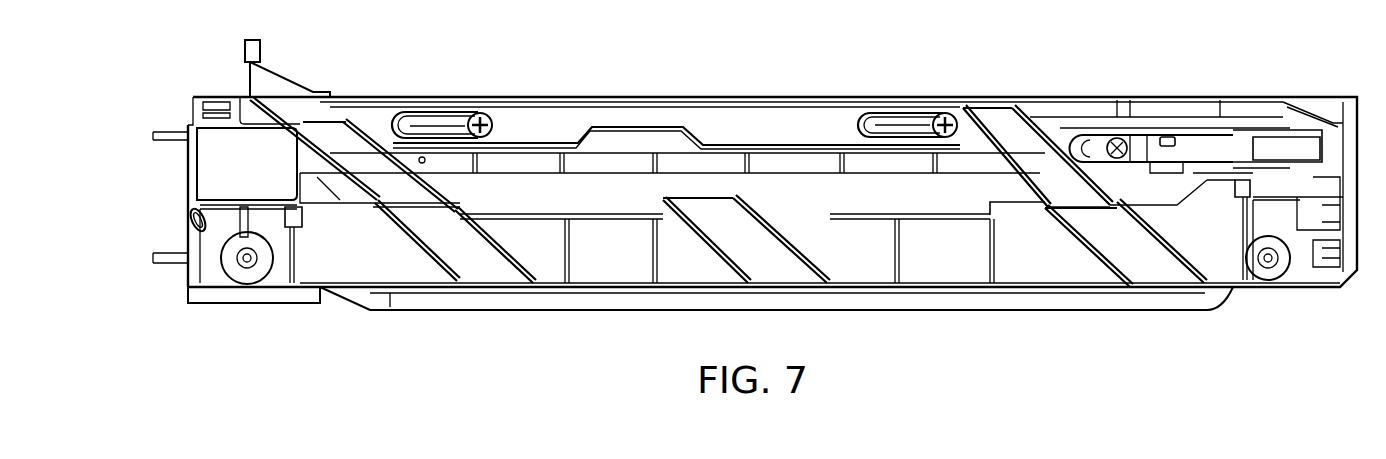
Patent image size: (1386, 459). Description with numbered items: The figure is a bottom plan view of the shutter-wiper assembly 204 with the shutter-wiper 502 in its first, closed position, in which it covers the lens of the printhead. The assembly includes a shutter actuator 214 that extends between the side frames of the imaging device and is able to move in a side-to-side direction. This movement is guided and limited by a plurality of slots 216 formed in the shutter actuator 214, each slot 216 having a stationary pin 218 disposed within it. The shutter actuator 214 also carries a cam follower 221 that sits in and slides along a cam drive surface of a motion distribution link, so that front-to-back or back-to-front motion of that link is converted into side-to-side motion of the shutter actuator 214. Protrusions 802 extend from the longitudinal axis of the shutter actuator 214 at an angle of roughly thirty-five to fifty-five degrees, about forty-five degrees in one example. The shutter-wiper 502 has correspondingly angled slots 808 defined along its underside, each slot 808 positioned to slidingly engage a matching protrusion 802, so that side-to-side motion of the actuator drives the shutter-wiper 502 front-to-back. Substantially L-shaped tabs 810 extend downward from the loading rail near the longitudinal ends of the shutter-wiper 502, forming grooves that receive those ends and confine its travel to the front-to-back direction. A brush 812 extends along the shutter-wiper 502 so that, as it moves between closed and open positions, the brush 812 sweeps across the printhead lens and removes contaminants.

The shutter-wiper assembly 204 is at (755, 171).
The shutter actuator 214 is at (755, 122).
The slot 216 is at (428, 112).
The stationary pin 218 is at (485, 112).
The cam follower 221 is at (192, 218).
The shutter-wiper 502 is at (872, 262).
The protrusion 802 is at (347, 148).
The slot 808 is at (478, 265).
The tab 810 is at (297, 216).
The brush 812 is at (613, 300).